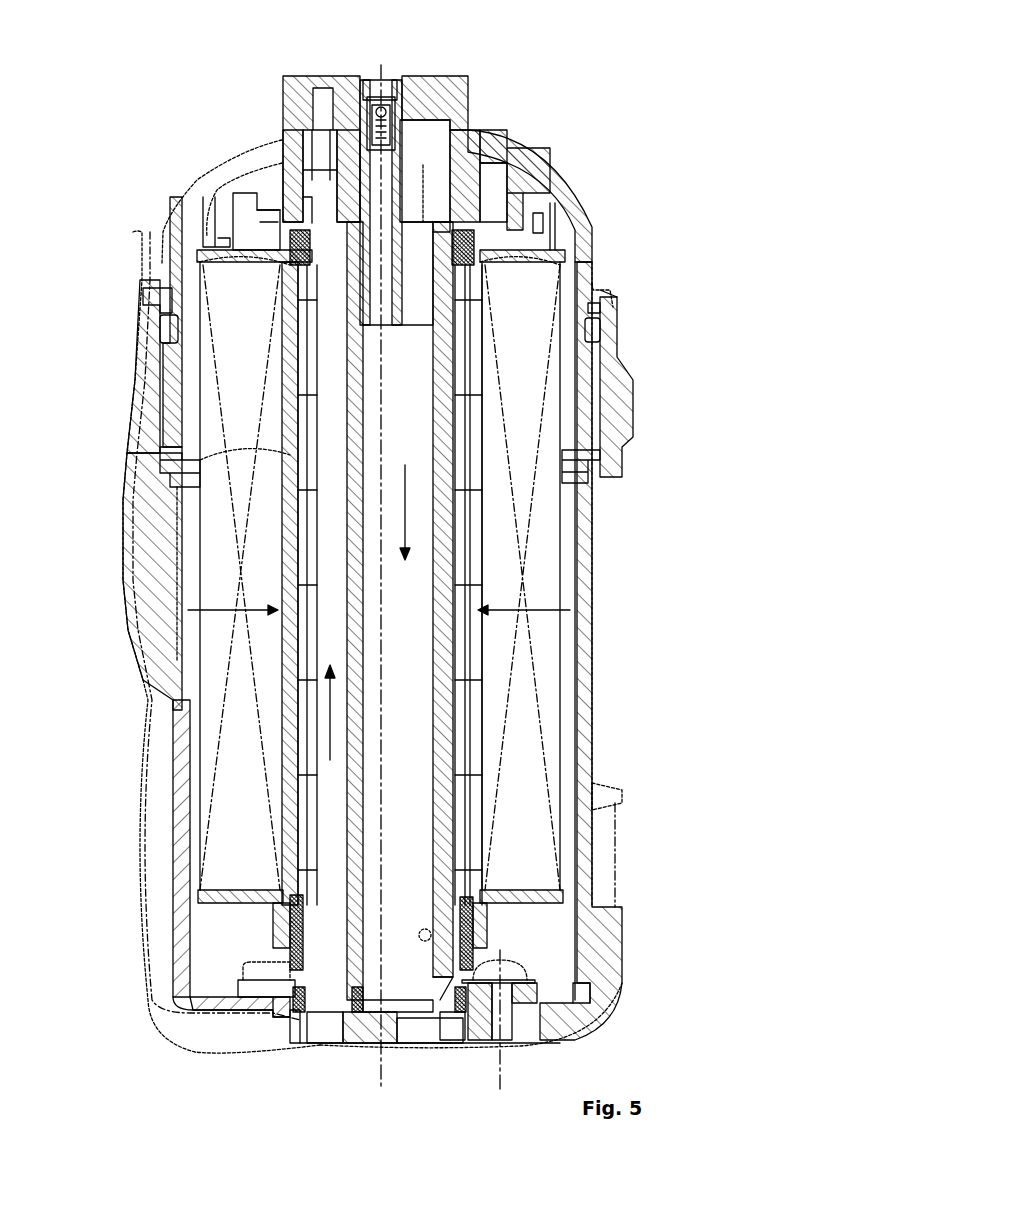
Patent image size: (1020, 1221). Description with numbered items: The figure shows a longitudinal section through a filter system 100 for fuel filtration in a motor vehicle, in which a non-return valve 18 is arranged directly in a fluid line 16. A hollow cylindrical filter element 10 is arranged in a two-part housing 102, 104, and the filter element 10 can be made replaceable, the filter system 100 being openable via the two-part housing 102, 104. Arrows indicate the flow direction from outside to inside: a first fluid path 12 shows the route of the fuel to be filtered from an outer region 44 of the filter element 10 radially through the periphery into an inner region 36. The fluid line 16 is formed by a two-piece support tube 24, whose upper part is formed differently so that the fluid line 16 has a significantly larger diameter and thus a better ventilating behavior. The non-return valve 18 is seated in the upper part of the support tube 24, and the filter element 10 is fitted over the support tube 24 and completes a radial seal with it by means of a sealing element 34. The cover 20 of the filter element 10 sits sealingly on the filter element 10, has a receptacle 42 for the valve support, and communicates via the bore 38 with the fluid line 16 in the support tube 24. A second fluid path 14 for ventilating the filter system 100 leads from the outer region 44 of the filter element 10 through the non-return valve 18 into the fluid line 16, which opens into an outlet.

The filter system 100 is at (670, 152).
The housing part 102 is at (563, 178).
The housing part 104 is at (585, 702).
The filter element 10 is at (218, 497).
The first fluid path 12 is at (205, 590).
The second fluid path 14 is at (370, 95).
The fluid line 16 is at (410, 372).
The non-return valve 18 is at (398, 92).
The cover 20 is at (215, 232).
The support tube 24 is at (322, 158).
The sealing element 34 is at (270, 215).
The inner region 36 is at (272, 445).
The bore 38 is at (437, 157).
The receptacle 42 is at (200, 277).
The outer region 44 is at (432, 148).